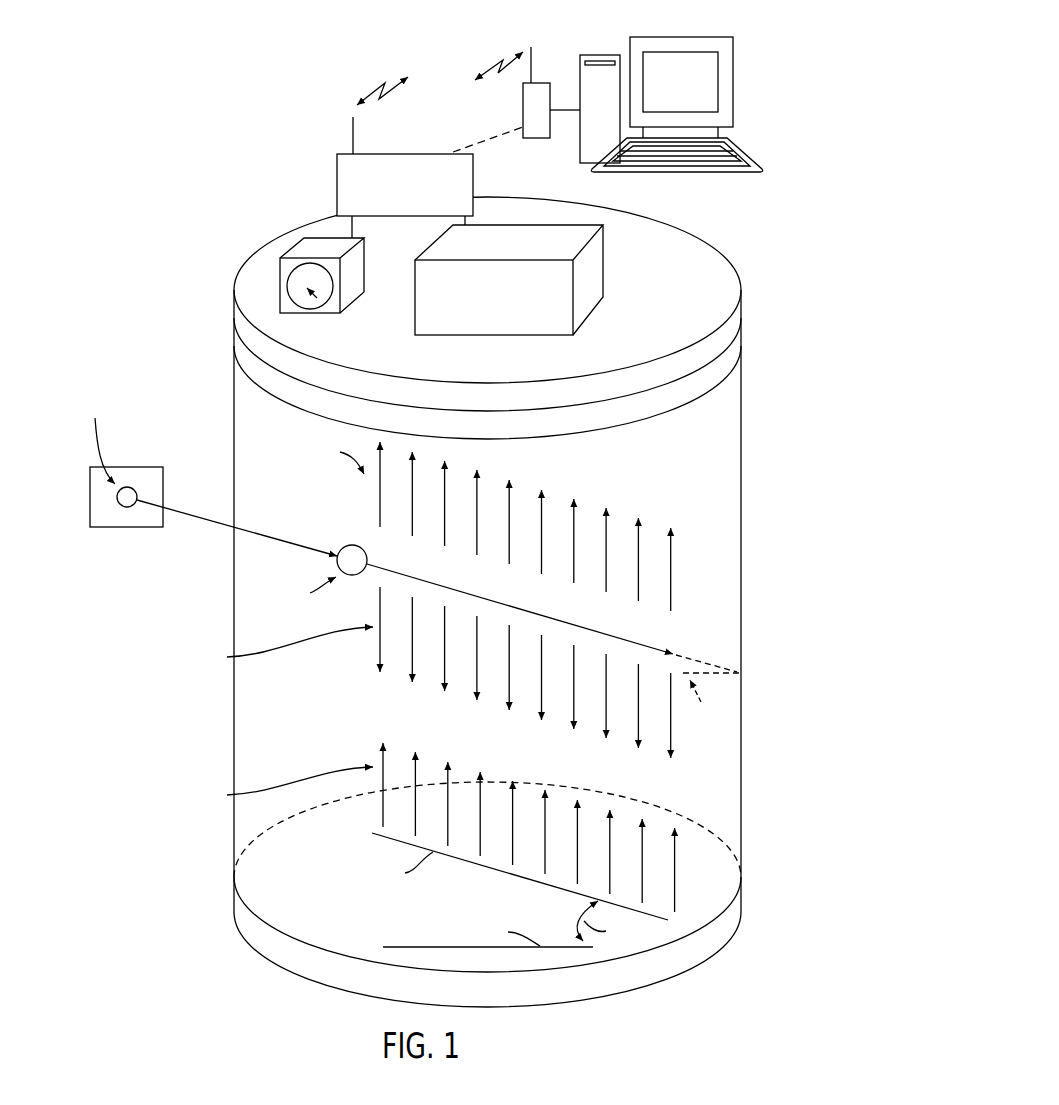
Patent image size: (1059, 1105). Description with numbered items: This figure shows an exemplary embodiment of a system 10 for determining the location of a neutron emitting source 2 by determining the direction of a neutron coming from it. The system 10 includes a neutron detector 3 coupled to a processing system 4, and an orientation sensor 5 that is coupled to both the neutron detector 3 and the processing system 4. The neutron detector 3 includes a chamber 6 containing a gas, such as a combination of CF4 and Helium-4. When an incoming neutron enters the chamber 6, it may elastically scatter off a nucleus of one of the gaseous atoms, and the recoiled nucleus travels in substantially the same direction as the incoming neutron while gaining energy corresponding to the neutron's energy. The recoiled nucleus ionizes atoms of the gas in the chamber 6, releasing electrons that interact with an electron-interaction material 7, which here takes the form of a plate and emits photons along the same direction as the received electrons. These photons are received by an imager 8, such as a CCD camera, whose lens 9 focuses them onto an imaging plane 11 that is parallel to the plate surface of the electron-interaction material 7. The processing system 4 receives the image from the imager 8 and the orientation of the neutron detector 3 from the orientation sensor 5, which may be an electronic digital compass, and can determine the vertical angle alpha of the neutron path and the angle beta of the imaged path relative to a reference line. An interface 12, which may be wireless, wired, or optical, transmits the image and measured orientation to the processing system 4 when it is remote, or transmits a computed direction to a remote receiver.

The neutron emitting source 2 is at (127, 466).
The neutron detector 3 is at (227, 383).
The processing system 4 is at (602, 54).
The orientation sensor 5 is at (328, 257).
The chamber 6 is at (236, 440).
The electron-interaction material 7 is at (240, 910).
The imager 8 is at (238, 319).
The lens 9 is at (238, 355).
The system 10 is at (140, 122).
The imaging plane 11 is at (448, 409).
The interface 12 is at (416, 196).